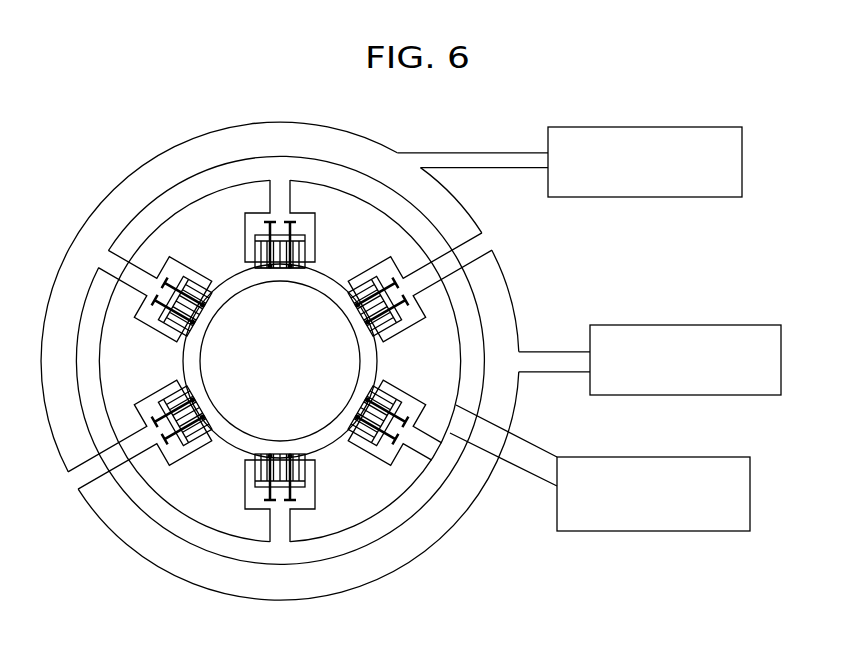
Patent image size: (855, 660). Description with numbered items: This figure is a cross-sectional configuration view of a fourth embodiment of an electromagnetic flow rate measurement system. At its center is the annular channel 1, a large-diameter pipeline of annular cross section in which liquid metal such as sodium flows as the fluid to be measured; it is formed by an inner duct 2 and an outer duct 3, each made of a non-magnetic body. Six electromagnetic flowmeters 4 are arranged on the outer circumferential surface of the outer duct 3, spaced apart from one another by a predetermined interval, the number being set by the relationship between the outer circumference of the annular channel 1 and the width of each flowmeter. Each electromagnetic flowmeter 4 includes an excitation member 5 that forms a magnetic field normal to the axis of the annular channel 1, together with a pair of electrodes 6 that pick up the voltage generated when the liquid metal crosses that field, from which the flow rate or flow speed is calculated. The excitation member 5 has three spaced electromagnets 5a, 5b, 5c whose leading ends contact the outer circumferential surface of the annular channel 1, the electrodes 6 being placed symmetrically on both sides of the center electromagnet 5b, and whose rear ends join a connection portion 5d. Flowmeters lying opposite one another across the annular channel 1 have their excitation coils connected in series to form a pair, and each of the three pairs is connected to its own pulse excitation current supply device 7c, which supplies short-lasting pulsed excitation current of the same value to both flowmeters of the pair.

The annular channel 1 is at (308, 392).
The inner duct 2 is at (304, 287).
The outer duct 3 is at (380, 366).
The electromagnetic flowmeter 4 is at (280, 319).
The excitation member 5 is at (290, 182).
The electromagnet 5a is at (326, 248).
The center electromagnet 5b is at (317, 236).
The electromagnet 5c is at (239, 258).
The connection portion 5d is at (246, 233).
The electrodes 6 is at (255, 245).
The pulse excitation current supply device 7c is at (655, 126).